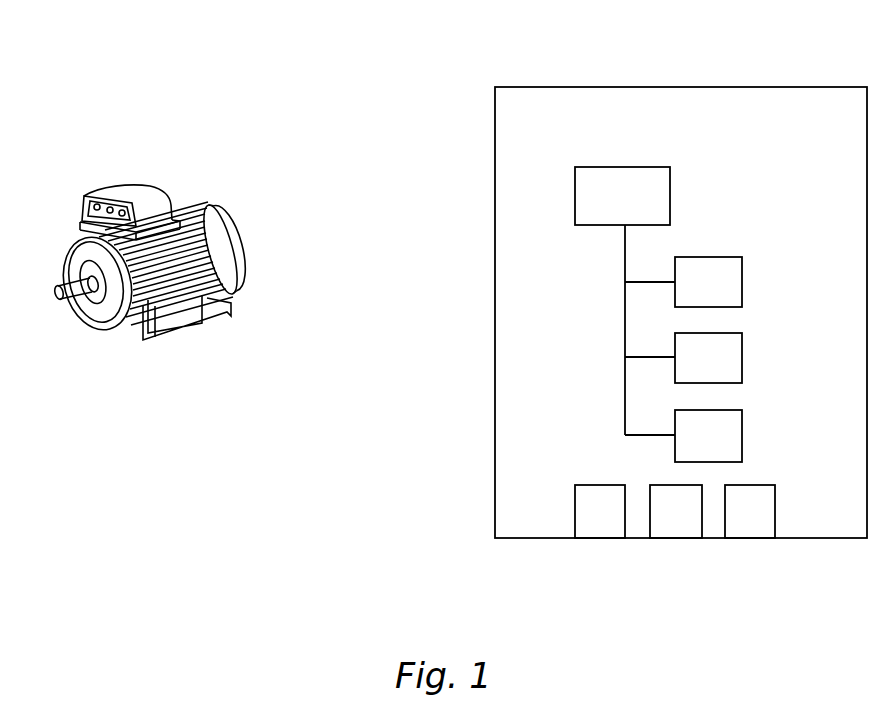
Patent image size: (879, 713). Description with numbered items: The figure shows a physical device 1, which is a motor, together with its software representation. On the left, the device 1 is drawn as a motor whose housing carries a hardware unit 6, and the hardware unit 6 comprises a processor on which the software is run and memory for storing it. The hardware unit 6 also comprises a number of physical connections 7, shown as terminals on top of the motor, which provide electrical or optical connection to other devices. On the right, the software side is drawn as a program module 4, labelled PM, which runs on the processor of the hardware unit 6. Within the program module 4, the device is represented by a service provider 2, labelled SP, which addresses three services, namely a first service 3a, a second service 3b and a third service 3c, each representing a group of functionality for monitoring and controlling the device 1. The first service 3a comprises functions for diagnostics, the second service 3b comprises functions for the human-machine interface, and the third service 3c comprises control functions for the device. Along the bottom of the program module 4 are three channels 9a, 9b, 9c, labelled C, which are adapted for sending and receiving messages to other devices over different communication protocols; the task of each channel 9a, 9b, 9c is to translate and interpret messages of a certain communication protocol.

The device 1 is at (126, 261).
The service provider 2 is at (653, 195).
The first service 3a is at (730, 280).
The second service 3b is at (730, 357).
The third service 3c is at (730, 435).
The program module 4 is at (697, 103).
The hardware unit 6 is at (93, 189).
The physical connections 7 is at (124, 210).
The channel 9a is at (598, 530).
The channel 9b is at (675, 530).
The channel 9c is at (747, 530).